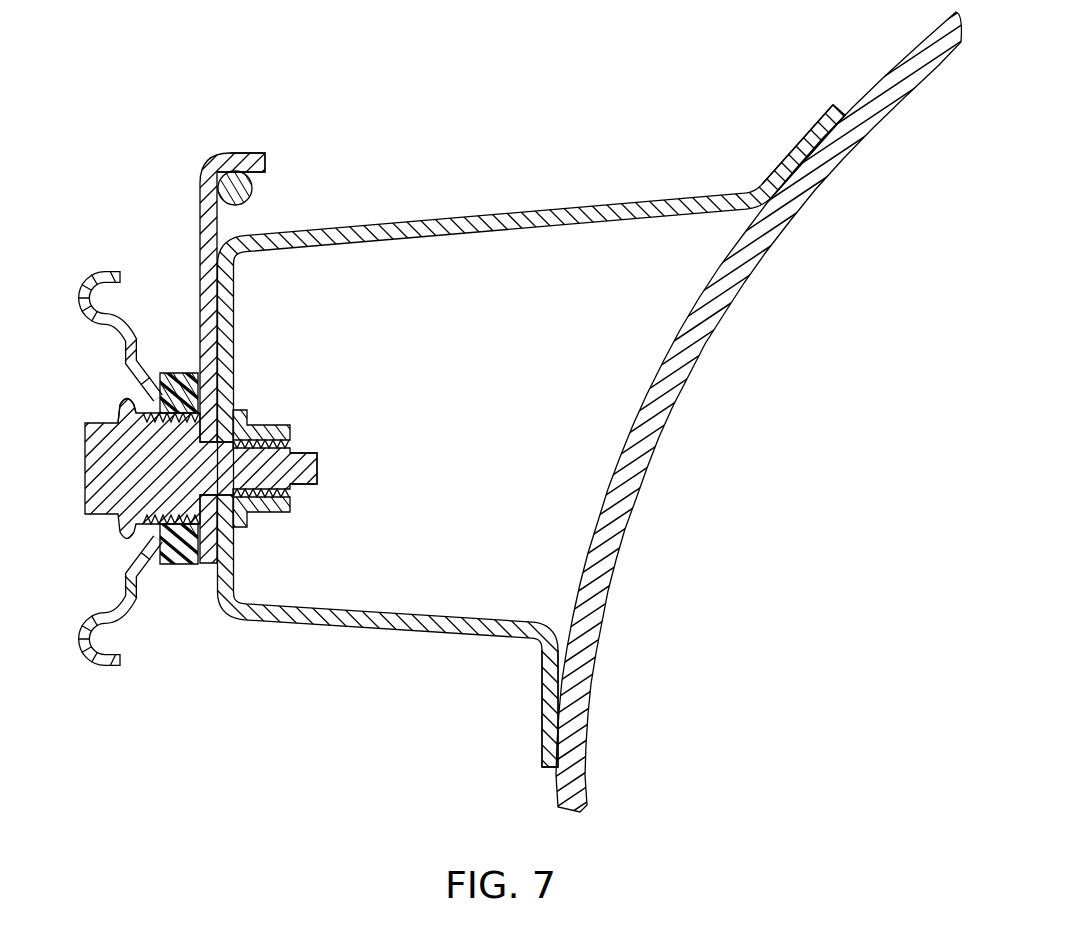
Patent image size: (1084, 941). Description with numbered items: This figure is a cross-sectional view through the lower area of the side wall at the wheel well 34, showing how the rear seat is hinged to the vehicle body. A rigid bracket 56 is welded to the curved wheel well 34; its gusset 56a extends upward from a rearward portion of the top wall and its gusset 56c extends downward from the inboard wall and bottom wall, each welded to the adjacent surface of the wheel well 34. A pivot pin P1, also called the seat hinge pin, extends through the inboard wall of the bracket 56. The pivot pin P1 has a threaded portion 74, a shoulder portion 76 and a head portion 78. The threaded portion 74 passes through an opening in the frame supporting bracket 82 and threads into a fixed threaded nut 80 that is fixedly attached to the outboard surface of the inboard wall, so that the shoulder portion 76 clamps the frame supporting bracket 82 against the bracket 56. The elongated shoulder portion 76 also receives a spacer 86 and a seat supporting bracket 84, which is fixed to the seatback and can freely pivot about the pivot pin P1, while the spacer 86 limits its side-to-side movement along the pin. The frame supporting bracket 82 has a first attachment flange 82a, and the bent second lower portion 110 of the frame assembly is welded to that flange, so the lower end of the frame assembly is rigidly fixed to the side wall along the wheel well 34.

The wheel well 34 is at (667, 392).
The bracket 56 is at (382, 631).
The gusset 56a is at (795, 150).
The gusset 56c is at (546, 707).
The threaded portion 74 is at (293, 468).
The shoulder portion 76 is at (205, 505).
The head portion 78 is at (100, 472).
The fixed threaded nut 80 is at (250, 436).
The frame supporting bracket 82 is at (199, 220).
The first attachment flange 82a is at (247, 160).
The second lower portion 110 is at (249, 198).
The seat supporting bracket 84 is at (80, 301).
The spacer 86 is at (178, 397).
The pivot pin P1 is at (107, 447).